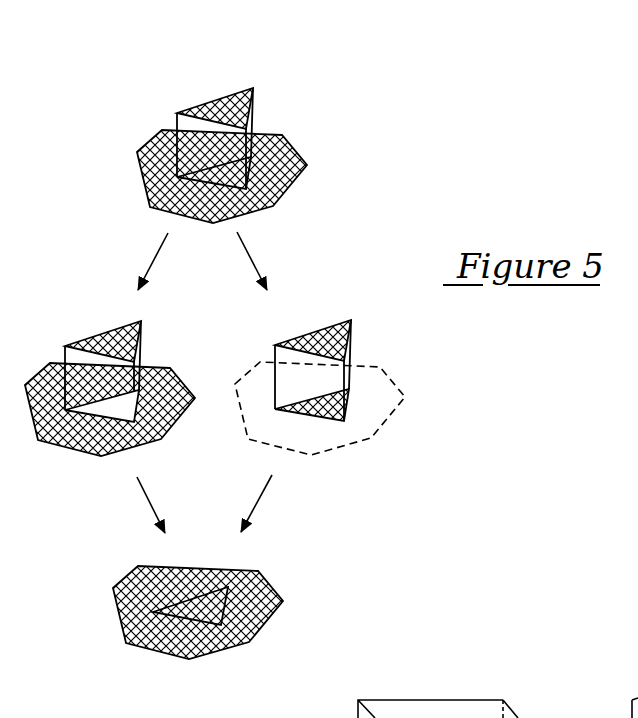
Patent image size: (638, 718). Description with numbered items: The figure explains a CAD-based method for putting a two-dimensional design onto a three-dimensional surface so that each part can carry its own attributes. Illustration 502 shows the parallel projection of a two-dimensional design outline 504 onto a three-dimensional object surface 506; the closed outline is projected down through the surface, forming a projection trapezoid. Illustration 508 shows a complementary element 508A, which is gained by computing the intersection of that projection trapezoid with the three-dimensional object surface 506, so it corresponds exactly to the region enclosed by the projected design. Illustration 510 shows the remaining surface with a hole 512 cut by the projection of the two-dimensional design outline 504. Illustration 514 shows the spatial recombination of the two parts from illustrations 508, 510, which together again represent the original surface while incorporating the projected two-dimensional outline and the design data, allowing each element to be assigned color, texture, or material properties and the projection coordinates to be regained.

The illustration of parallel projection 502 is at (181, 148).
The 2D design outline 504 is at (225, 105).
The 3D object surface 506 is at (152, 181).
The illustration of complementary element 508 is at (315, 316).
The complementary element 508A is at (349, 404).
The illustration of hole cut 510 is at (130, 361).
The hole 512 is at (140, 402).
The illustration of spatial recombination 514 is at (266, 555).